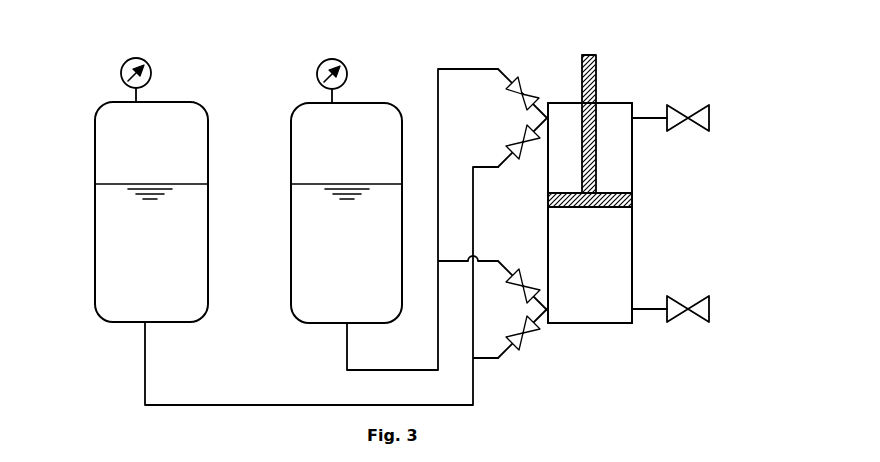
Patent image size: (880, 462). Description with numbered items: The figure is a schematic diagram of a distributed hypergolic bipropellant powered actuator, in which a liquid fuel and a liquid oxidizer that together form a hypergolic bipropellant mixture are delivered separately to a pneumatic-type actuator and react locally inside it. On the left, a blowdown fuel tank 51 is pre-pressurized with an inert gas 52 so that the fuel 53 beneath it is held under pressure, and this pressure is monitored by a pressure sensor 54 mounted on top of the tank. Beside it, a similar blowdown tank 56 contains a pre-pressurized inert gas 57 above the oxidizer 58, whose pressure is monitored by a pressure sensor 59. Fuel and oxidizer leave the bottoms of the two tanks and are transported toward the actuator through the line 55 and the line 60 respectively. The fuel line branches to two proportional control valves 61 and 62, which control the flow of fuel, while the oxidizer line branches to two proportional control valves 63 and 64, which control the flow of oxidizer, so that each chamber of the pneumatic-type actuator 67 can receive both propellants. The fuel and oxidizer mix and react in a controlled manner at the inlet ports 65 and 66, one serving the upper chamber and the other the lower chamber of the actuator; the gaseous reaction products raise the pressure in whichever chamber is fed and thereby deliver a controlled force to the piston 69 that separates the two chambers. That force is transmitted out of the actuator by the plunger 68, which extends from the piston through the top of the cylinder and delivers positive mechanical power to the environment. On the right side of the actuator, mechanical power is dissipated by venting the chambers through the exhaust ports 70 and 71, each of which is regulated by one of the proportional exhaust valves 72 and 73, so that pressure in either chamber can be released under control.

The blowdown fuel tank 51 is at (93, 212).
The inert gas 52 is at (120, 146).
The fuel 53 is at (120, 254).
The pressure sensor 54 is at (117, 84).
The line 55 is at (144, 345).
The blowdown tank 56 is at (290, 212).
The inert gas 57 is at (316, 146).
The oxidizer 58 is at (316, 254).
The pressure sensor 59 is at (312, 84).
The line 60 is at (346, 345).
The proportional control valve 61 is at (517, 130).
The proportional control valve 62 is at (530, 340).
The proportional control valve 63 is at (528, 80).
The proportional control valve 64 is at (520, 268).
The inlet port 65 is at (552, 125).
The inlet port 66 is at (550, 308).
The pneumatic-type actuator 67 is at (606, 326).
The plunger 68 is at (599, 72).
The piston 69 is at (609, 210).
The exhaust port 70 is at (633, 120).
The exhaust port 71 is at (634, 309).
The proportional exhaust valve 72 is at (691, 110).
The proportional exhaust valve 73 is at (691, 320).